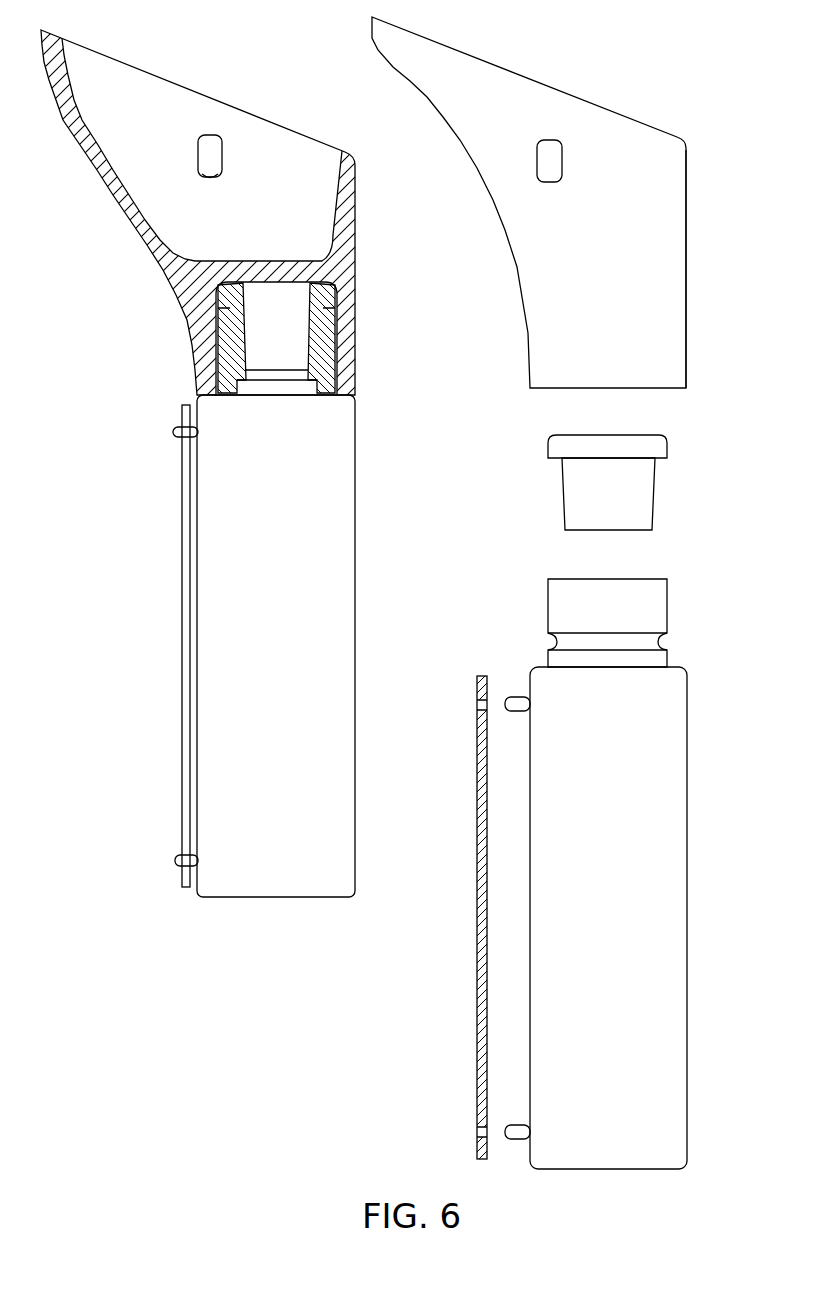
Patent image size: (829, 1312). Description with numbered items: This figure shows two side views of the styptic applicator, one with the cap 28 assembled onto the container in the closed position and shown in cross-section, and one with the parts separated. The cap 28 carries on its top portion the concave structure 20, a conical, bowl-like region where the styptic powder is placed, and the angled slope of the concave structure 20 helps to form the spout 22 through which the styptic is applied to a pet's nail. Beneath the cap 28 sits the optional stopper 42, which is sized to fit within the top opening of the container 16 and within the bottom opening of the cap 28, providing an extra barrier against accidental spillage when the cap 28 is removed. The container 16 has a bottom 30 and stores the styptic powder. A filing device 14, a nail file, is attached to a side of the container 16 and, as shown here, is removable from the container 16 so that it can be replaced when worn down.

The concave structure 20 is at (263, 133).
The spout 22 is at (462, 48).
The cap 28 is at (687, 302).
The stopper 42 is at (290, 342).
The filing device 14 is at (181, 657).
The bottom 30 is at (243, 898).
The container 16 is at (687, 792).